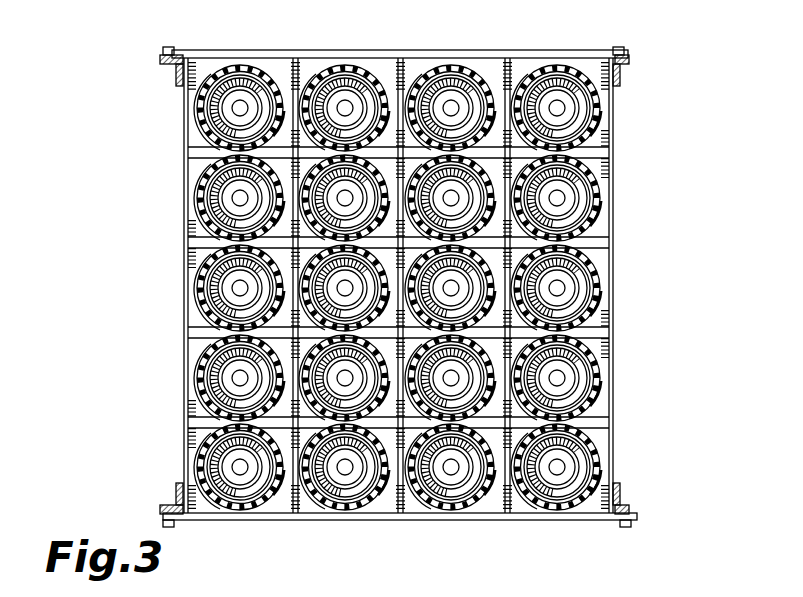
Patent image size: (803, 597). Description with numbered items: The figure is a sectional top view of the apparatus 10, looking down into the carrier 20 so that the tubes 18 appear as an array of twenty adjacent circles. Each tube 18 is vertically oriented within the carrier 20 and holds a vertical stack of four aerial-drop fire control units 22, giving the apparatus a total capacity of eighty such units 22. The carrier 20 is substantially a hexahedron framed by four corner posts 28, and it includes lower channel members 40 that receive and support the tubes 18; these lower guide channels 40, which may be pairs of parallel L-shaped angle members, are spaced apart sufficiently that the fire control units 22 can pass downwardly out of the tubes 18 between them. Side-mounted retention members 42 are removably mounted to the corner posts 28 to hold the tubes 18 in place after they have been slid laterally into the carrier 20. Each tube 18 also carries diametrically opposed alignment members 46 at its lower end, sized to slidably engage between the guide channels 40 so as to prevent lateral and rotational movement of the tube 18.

The apparatus 10 is at (168, 278).
The tube 18 is at (240, 70).
The carrier 20 is at (614, 238).
The aerial-drop fire control unit 22 is at (486, 72).
The corner post 28 is at (176, 70).
The lower channel member 40 is at (297, 64).
The side-mounted retention member 42 is at (444, 53).
The lower alignment member 46 is at (613, 82).